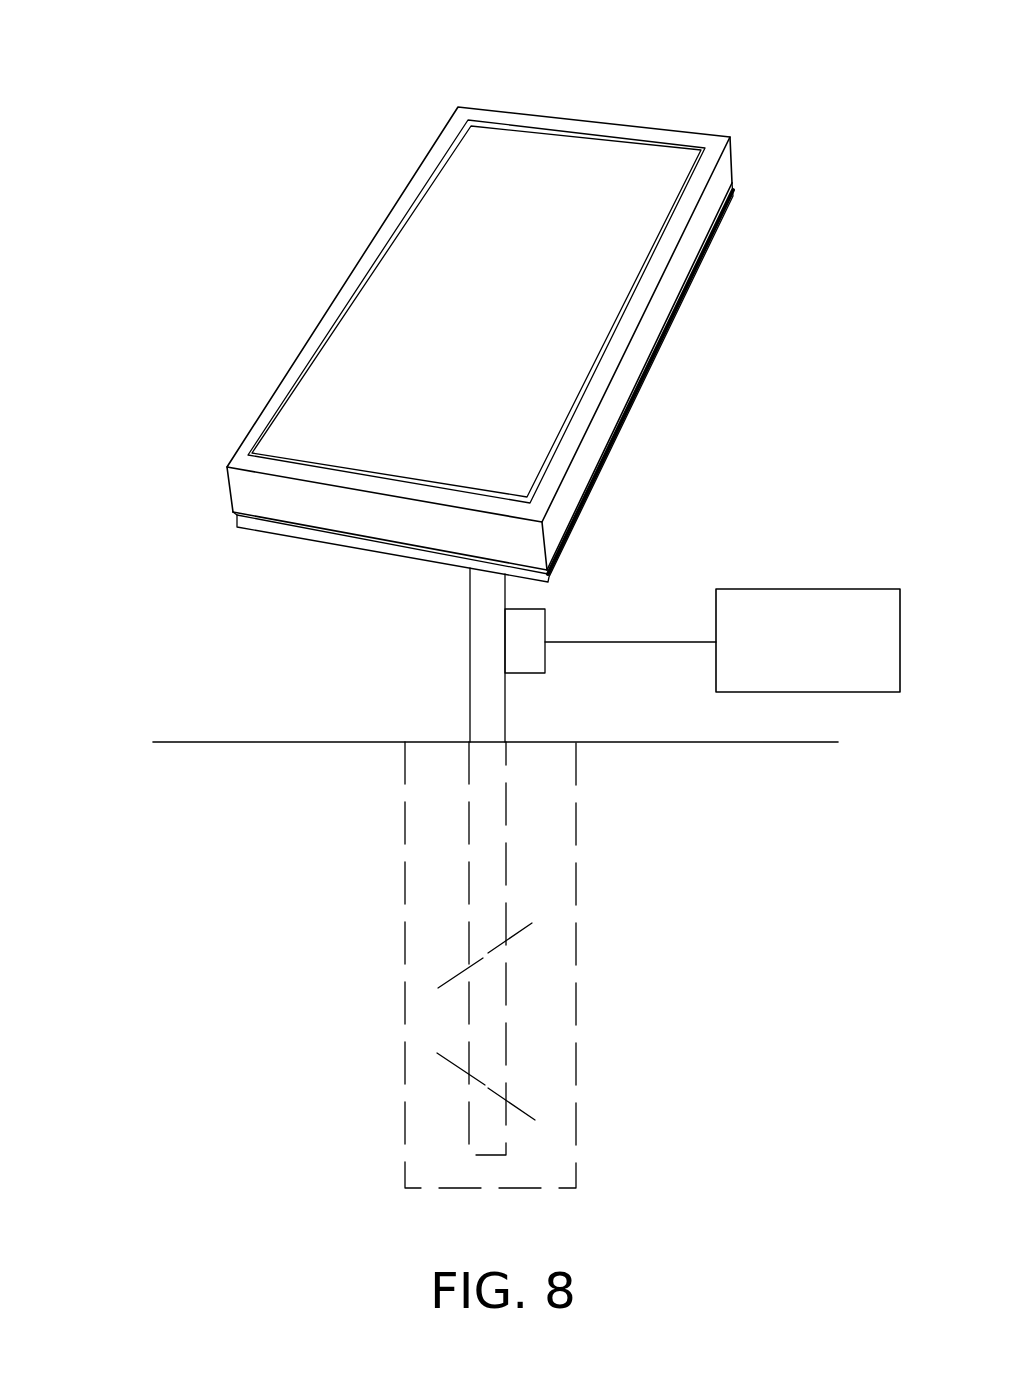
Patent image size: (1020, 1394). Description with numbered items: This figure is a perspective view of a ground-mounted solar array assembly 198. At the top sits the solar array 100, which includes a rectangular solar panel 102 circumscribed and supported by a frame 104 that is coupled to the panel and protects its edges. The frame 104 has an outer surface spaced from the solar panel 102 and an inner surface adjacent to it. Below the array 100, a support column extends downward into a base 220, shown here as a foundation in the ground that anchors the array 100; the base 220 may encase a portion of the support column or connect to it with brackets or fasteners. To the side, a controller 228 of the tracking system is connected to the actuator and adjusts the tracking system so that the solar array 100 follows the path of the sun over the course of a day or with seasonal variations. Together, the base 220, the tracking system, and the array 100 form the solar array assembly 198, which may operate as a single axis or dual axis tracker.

The solar array 100 is at (472, 597).
The solar panel 102 is at (627, 153).
The frame 104 is at (517, 322).
The solar array assembly 198 is at (426, 322).
The base 220 is at (405, 930).
The controller 228 is at (827, 657).